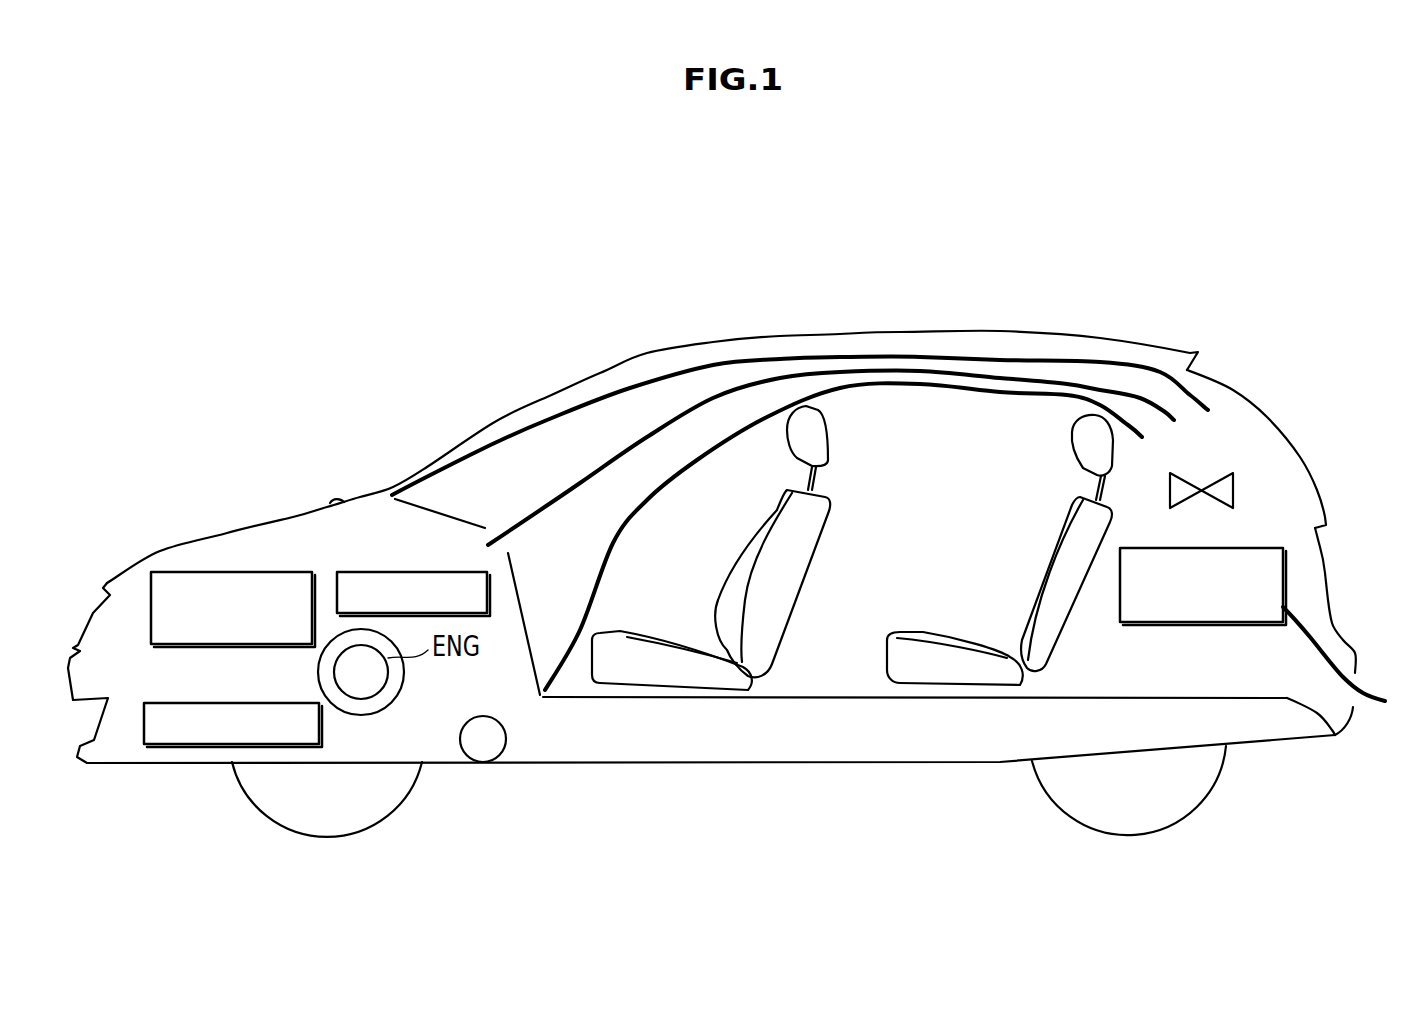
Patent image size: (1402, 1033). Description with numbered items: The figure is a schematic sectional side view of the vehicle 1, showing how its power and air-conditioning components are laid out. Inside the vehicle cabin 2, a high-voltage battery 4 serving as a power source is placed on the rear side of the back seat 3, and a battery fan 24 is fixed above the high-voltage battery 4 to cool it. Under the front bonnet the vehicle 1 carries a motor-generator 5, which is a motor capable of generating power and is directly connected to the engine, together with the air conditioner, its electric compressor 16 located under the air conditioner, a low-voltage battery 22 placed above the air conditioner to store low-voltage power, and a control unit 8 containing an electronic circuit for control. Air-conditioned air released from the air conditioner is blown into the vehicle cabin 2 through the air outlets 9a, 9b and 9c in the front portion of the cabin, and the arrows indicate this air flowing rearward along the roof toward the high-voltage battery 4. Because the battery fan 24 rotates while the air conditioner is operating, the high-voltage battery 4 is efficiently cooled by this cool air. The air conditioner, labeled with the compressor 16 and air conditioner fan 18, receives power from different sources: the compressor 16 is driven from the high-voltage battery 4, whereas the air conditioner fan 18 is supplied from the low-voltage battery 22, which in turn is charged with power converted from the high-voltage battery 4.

The vehicle 1 is at (277, 415).
The vehicle cabin 2 is at (847, 560).
The back seat 3 is at (1050, 540).
The high-voltage battery 4 is at (1250, 548).
The motor-generator 5 is at (397, 705).
The control unit 8 is at (410, 572).
The air outlet 9a is at (410, 492).
The air outlet 9b is at (508, 546).
The air outlet 9c is at (841, 536).
The electric compressor 16 is at (506, 735).
The air conditioner fan 18 is at (188, 750).
The low-voltage battery 22 is at (217, 572).
The battery fan 24 is at (1233, 487).